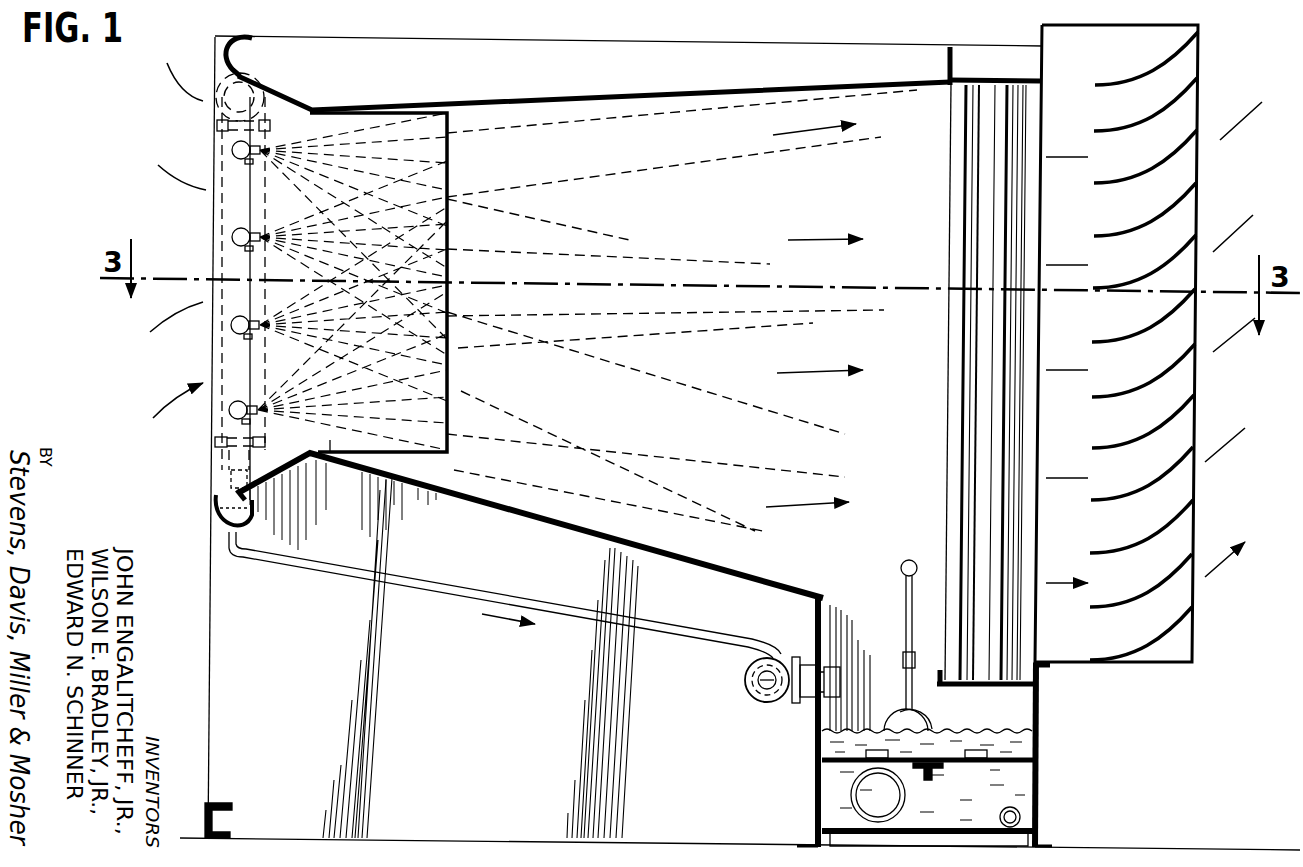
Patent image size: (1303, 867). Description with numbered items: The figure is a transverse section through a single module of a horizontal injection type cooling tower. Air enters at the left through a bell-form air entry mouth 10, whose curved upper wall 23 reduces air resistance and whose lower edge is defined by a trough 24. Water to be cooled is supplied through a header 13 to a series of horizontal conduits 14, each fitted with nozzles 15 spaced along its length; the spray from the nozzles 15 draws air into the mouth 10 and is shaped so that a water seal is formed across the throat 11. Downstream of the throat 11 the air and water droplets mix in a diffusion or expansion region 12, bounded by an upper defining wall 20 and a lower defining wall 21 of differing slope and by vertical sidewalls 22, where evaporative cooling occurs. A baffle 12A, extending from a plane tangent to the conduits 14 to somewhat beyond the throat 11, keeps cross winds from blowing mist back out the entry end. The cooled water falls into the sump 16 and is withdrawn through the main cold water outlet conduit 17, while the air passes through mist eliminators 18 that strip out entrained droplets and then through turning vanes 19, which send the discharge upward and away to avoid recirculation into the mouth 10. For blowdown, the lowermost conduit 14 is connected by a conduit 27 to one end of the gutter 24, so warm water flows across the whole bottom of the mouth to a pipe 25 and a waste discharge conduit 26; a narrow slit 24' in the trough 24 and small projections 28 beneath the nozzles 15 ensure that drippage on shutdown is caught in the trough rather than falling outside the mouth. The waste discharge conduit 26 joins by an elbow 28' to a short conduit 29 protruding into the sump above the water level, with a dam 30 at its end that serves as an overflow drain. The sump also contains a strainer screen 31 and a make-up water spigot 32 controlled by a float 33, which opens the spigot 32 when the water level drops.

The air entry mouth 10 is at (288, 117).
The throat 11 is at (330, 443).
The diffusion or expansion region 12 is at (697, 228).
The baffle 12A is at (452, 176).
The header 13 is at (224, 150).
The horizontal conduits 14 is at (237, 235).
The nozzles 15 is at (258, 157).
The sump 16 is at (840, 798).
The conduit 17 is at (900, 793).
The mist eliminators 18 is at (970, 183).
The turning vanes 19 is at (1178, 250).
The upper defining wall 20 is at (528, 103).
The lower defining wall 21 is at (447, 490).
The sidewalls 22 is at (617, 498).
The upper wall 23 is at (230, 52).
The trough 24 is at (205, 510).
The slit 24' is at (200, 479).
The pipe 25 is at (428, 592).
The waste discharge conduit 26 is at (744, 679).
The conduit 27 is at (215, 433).
The projections 28 is at (269, 291).
The elbow 28' is at (763, 697).
The short conduit 29 is at (808, 698).
The dam 30 is at (840, 700).
The strainer screen 31 is at (1003, 765).
The make-up water spigot 32 is at (908, 559).
The float 33 is at (902, 708).